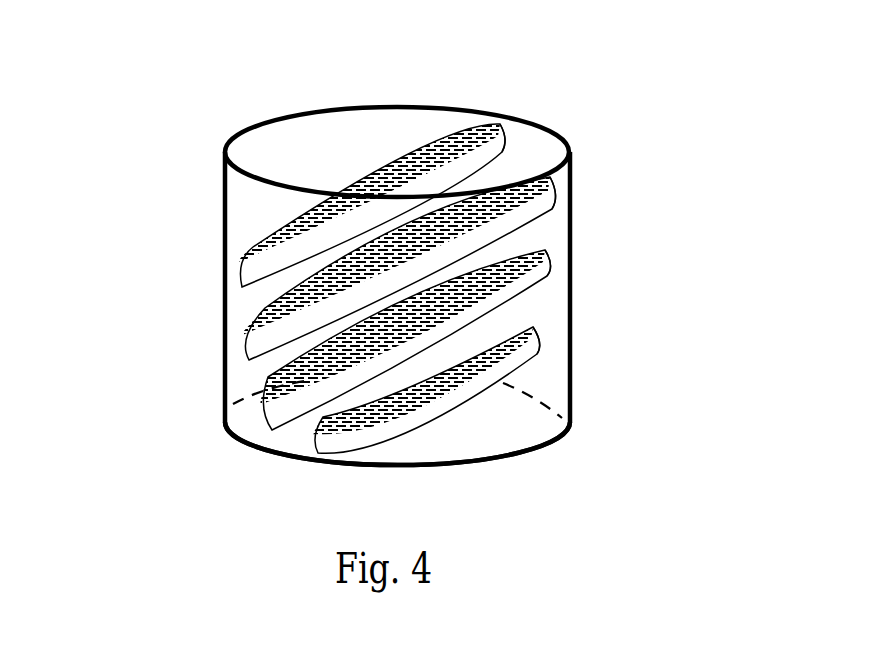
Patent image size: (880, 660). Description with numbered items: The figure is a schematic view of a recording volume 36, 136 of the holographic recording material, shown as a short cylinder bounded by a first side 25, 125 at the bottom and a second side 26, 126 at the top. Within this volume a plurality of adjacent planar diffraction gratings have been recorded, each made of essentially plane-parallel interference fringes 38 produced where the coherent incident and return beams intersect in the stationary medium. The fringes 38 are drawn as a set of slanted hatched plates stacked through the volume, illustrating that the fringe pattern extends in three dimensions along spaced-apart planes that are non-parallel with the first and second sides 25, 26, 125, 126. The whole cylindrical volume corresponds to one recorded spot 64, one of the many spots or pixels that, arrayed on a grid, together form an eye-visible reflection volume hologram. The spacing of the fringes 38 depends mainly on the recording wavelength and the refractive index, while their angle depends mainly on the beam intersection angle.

The recorded spot 64 is at (212, 235).
The second side of the recording medium 26 is at (363, 129).
The second side of the recording medium 126 is at (291, 142).
The recording volume 36 is at (299, 288).
The recording volume 136 is at (250, 305).
The interference fringes 38 is at (537, 205).
The first side of the recording medium 25 is at (441, 462).
The first side of the recording medium 125 is at (525, 432).